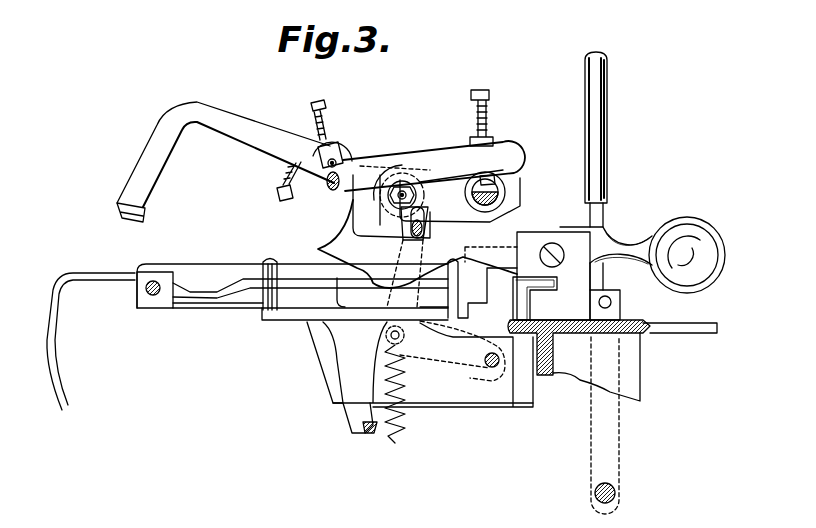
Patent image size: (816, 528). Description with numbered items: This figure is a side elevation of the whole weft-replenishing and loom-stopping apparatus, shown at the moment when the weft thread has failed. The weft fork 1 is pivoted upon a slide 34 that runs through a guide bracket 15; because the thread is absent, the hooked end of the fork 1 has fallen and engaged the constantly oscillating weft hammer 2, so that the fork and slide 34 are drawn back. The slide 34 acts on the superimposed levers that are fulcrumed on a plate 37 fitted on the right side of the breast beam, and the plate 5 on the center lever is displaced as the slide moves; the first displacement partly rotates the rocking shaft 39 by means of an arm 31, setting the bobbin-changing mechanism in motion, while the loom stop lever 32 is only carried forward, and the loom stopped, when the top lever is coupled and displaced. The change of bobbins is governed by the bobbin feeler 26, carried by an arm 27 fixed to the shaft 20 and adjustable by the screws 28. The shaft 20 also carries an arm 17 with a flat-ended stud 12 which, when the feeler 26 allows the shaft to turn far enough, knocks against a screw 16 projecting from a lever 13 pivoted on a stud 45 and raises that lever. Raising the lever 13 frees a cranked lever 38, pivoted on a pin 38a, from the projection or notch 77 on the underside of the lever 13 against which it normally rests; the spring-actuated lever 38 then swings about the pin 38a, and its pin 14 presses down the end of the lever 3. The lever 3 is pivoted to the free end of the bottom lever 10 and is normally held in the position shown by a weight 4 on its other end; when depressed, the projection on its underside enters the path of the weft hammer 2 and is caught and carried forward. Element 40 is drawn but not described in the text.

The weft fork 1 is at (210, 316).
The weft hammer 2 is at (350, 413).
The lever 3 is at (357, 238).
The weight 4 is at (681, 238).
The plate 5 is at (519, 305).
The bottom lever 10 is at (560, 276).
The stud 12 is at (499, 198).
The lever 13 is at (517, 147).
The pin 14 is at (410, 224).
The guide bracket 15 is at (278, 262).
The screw 16 is at (489, 118).
The arm 17 is at (460, 200).
The shaft 20 is at (404, 192).
The bobbin feeler 26 is at (227, 118).
The arm 27 is at (363, 158).
The screws 28 is at (325, 105).
The arm 31 is at (613, 303).
The loom stop lever 32 is at (593, 116).
The slide 34 is at (223, 270).
The plate 37 is at (683, 325).
The cranked lever 38 is at (430, 364).
The pin 38a is at (491, 368).
The rocking shaft 39 is at (617, 492).
The frame part 40 is at (574, 367).
The stud 45 is at (328, 188).
The projection or notch 77 is at (412, 190).